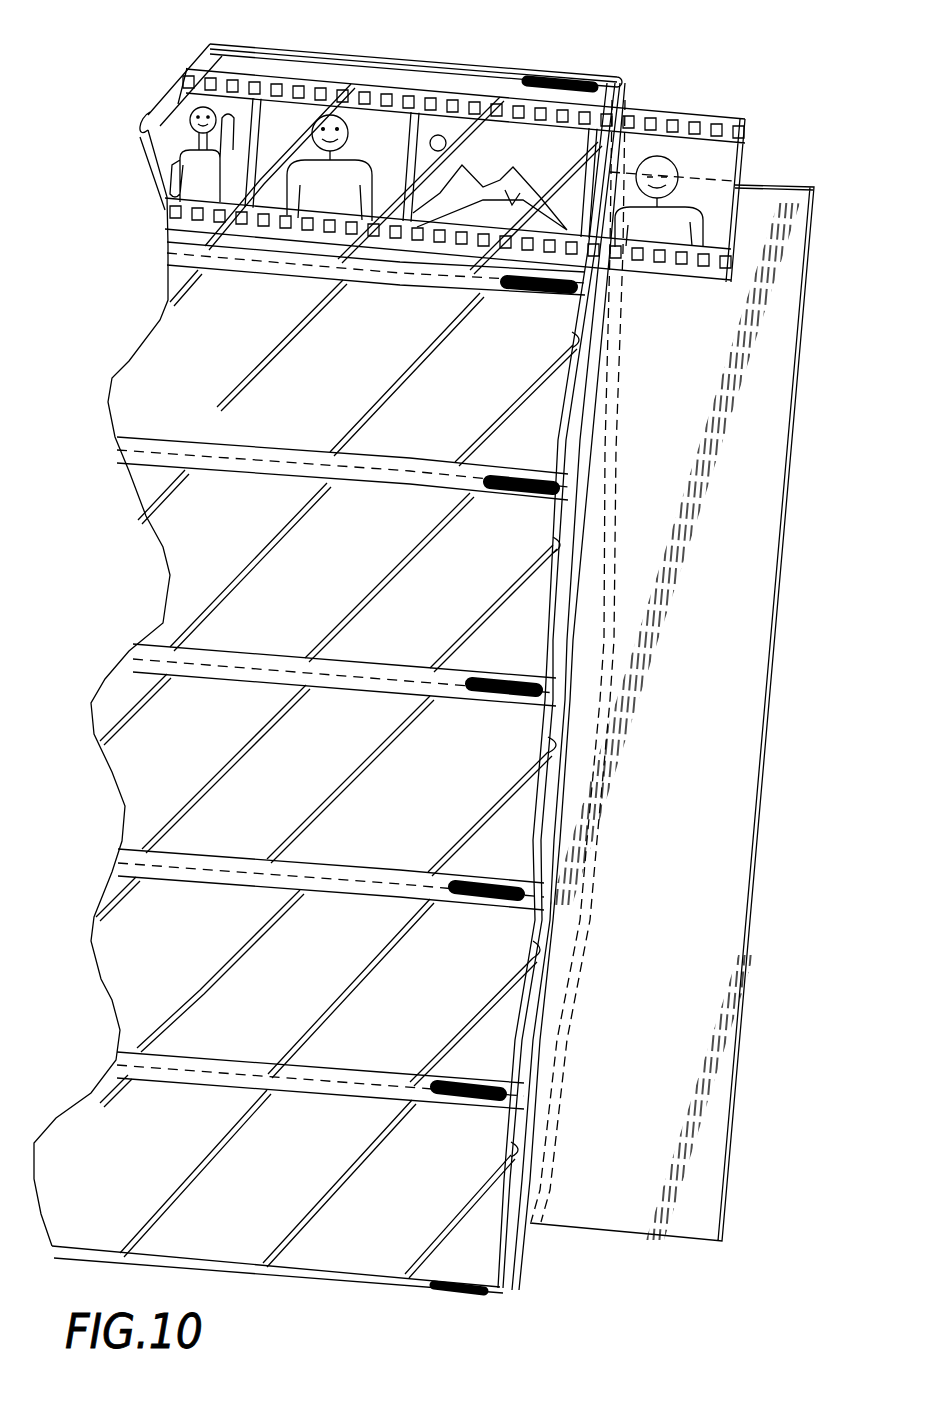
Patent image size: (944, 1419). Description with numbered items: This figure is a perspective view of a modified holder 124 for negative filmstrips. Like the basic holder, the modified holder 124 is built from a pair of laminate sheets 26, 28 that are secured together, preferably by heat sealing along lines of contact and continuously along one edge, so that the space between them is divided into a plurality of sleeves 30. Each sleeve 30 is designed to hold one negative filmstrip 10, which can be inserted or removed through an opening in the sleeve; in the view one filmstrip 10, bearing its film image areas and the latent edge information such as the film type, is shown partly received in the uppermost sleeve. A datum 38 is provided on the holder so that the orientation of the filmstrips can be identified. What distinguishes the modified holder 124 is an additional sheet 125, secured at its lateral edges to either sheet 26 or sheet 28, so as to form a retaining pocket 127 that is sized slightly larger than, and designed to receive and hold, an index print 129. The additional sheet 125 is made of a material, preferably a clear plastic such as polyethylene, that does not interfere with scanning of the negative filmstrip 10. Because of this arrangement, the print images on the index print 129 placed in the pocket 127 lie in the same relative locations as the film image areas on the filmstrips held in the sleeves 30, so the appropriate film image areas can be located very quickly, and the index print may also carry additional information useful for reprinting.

The negative filmstrip 10 is at (720, 110).
The laminate sheet 26 is at (213, 52).
The laminate sheet 28 is at (228, 45).
The sleeve 30 is at (578, 340).
The datum 38 is at (534, 294).
The modified holder 124 is at (592, 70).
The additional sheet 125 is at (258, 46).
The retaining pocket 127 is at (537, 1238).
The index print 129 is at (777, 184).